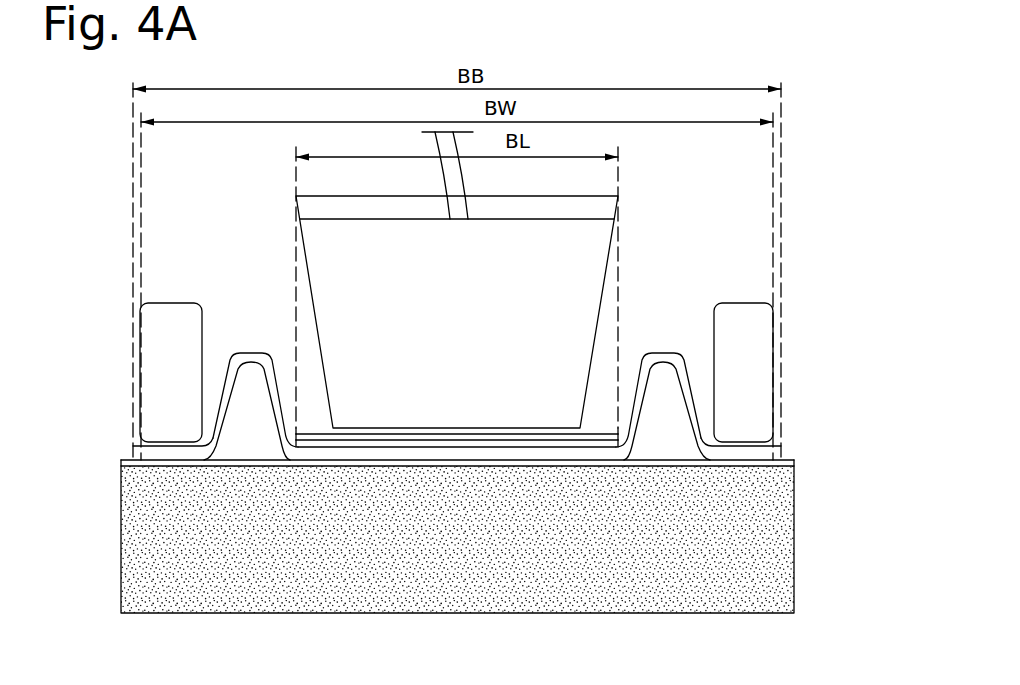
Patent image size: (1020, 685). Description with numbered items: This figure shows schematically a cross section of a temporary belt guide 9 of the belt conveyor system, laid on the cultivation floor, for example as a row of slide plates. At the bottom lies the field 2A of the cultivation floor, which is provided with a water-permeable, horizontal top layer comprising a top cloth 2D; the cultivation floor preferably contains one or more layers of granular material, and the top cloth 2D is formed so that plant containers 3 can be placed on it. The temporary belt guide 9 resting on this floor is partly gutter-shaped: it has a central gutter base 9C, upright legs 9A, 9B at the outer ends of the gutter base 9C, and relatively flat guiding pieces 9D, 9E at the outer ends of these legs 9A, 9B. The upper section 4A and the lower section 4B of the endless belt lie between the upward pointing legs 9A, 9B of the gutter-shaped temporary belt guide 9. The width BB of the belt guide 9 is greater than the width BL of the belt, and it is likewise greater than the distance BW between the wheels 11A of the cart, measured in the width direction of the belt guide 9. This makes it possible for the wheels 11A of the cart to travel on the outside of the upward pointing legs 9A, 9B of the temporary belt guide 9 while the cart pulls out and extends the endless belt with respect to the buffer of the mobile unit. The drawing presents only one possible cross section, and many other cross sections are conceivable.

The plant container 3 is at (578, 247).
The upper section of the endless belt 4A is at (318, 433).
The lower section of the endless belt 4B is at (308, 440).
The temporary belt guide 9 is at (585, 455).
The upright leg 9A is at (670, 357).
The upright leg 9B is at (243, 357).
The gutter base 9C is at (468, 453).
The guiding piece 9D is at (768, 452).
The guiding piece 9E is at (148, 456).
The wheel 11A is at (165, 352).
The field 2A is at (737, 547).
The top cloth 2D is at (785, 462).